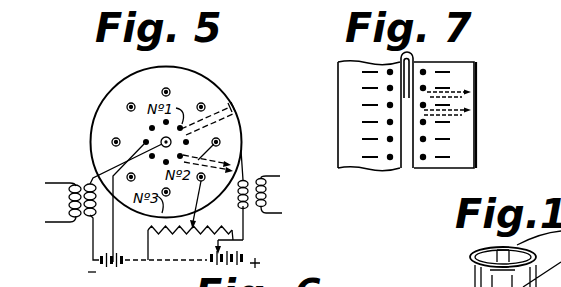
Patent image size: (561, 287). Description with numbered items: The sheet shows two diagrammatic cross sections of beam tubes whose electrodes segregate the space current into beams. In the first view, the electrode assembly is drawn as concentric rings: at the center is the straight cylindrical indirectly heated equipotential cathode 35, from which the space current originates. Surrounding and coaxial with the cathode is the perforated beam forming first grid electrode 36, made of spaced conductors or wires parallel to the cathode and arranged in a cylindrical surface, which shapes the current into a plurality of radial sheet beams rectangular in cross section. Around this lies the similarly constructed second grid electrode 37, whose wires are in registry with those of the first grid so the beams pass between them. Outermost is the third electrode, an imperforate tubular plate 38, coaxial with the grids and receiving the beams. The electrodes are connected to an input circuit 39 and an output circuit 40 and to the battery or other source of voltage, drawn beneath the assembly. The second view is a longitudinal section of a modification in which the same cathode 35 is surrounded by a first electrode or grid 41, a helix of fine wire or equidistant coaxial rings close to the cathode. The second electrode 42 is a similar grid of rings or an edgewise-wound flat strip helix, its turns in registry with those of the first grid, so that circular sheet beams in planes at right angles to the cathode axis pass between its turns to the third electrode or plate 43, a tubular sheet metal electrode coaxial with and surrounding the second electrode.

In FIG. 5, the cathode 35 is at (146, 142).
In FIG. 5, the No. 1 grid electrode 36 is at (152, 128).
In FIG. 5, the No. 2 grid electrode 37 is at (203, 105).
In FIG. 5, the imperforate tubular plate 38 is at (240, 122).
In FIG. 5, the input circuit 39 is at (84, 218).
In FIG. 5, the output circuit 40 is at (251, 215).
In FIG. 7, the No. 1 electrode or grid 41 is at (388, 69).
In FIG. 7, the No. 2 electrode 42 is at (448, 70).
In FIG. 7, the No. 3 electrode or plate 43 is at (477, 120).